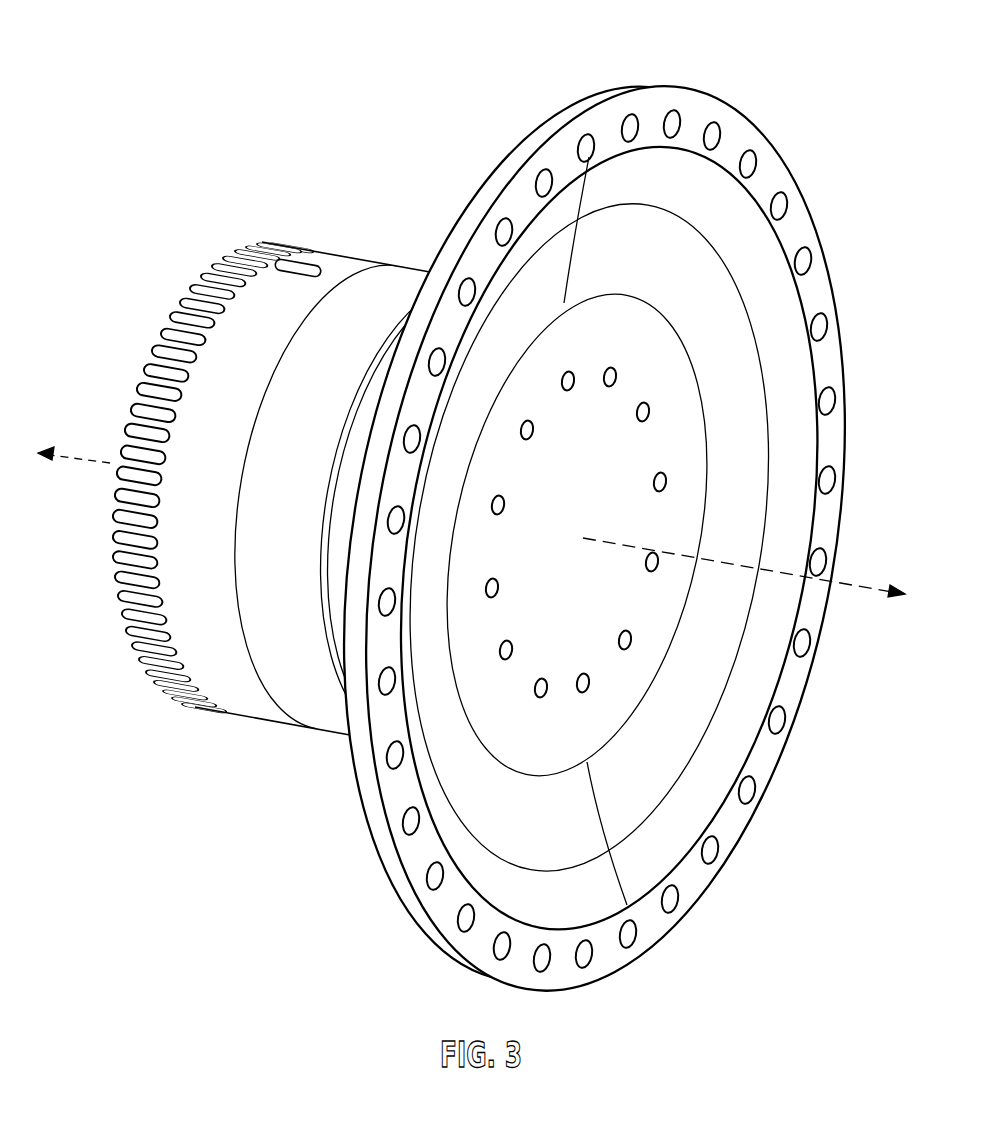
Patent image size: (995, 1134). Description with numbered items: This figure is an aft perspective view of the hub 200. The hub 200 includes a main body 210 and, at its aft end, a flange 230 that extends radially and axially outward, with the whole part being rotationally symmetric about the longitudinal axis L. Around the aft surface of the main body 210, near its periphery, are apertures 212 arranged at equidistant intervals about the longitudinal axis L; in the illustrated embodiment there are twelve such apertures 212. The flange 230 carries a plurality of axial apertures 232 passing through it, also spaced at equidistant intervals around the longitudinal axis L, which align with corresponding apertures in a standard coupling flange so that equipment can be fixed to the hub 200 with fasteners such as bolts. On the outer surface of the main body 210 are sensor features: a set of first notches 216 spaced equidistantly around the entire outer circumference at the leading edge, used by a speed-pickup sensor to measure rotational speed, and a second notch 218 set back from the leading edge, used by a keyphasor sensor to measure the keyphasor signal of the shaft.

The hub 200 is at (176, 38).
The main body 210 is at (583, 742).
The apertures 212 is at (662, 481).
The first notches 216 is at (112, 530).
The second notch 218 is at (313, 263).
The flange 230 is at (703, 104).
The axial apertures 232 is at (805, 262).
The longitudinal axis L is at (744, 557).